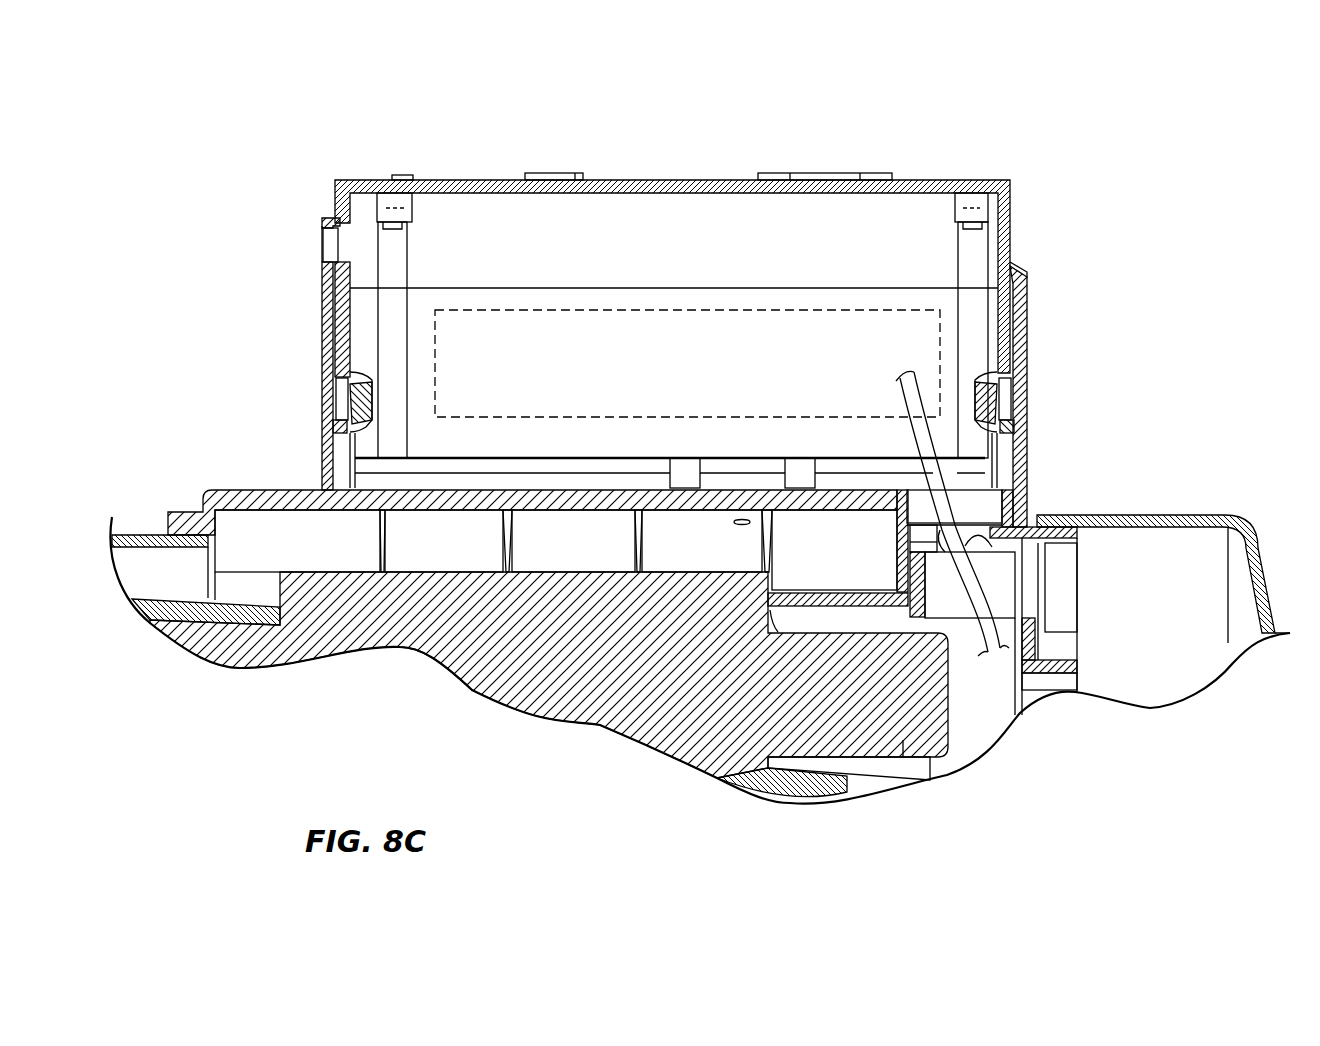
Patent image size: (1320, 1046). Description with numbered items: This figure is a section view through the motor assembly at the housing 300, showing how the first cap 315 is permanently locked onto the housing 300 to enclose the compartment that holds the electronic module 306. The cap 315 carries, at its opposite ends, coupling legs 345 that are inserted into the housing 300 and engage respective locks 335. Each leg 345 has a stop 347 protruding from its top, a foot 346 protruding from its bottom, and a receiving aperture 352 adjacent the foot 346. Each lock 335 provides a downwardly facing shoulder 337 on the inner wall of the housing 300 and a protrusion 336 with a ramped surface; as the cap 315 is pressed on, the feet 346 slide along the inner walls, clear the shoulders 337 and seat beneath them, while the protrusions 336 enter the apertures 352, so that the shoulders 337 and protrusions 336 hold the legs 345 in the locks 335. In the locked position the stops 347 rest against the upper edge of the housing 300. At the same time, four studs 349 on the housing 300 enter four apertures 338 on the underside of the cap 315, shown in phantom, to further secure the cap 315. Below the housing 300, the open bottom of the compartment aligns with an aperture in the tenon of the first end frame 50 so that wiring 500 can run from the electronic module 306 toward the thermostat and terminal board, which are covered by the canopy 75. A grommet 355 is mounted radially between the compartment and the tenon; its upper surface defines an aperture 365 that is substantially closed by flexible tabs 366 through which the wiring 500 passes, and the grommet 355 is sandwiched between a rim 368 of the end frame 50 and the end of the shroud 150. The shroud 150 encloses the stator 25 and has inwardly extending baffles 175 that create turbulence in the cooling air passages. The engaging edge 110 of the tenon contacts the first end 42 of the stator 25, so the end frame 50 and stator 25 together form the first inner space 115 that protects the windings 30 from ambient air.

The housing 300 is at (1027, 146).
The first cap 315 is at (700, 180).
The apertures 338 is at (421, 190).
The studs 349 is at (385, 245).
The electronic module 306 is at (603, 307).
The lock 335 is at (985, 364).
The stop 347 is at (323, 272).
The coupling legs 345 is at (330, 312).
The protrusion 336 is at (323, 362).
The downwardly facing shoulder 337 is at (322, 409).
The receiving aperture 352 is at (342, 397).
The foot 346 is at (335, 432).
The aperture 365 is at (922, 502).
The shroud 150 is at (250, 490).
The baffles 175 is at (505, 533).
The stator 25 is at (708, 597).
The first end 42 is at (783, 605).
The engaging edge 110 is at (783, 605).
The windings 30 is at (913, 757).
The first inner space 115 is at (973, 740).
The grommet 355 is at (897, 585).
The rim 368 is at (1027, 510).
The first end frame 50 is at (1065, 568).
The flexible tabs 366 is at (985, 560).
The wiring 500 is at (983, 608).
The canopy 75 is at (1217, 518).